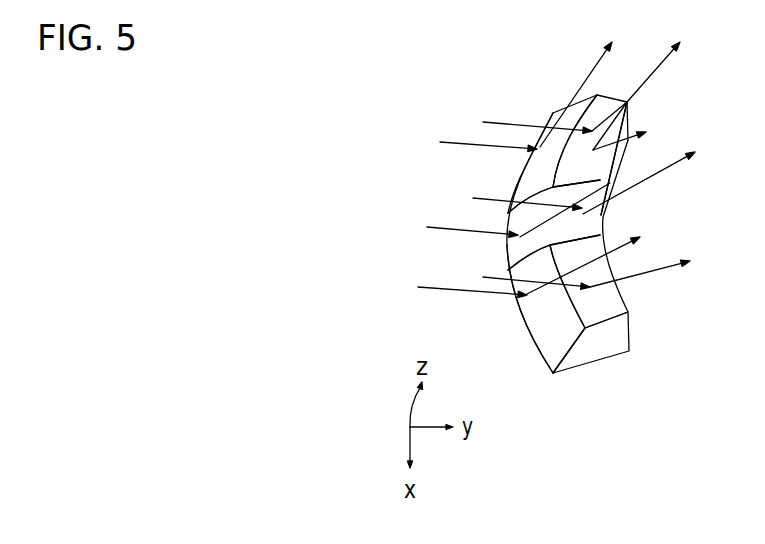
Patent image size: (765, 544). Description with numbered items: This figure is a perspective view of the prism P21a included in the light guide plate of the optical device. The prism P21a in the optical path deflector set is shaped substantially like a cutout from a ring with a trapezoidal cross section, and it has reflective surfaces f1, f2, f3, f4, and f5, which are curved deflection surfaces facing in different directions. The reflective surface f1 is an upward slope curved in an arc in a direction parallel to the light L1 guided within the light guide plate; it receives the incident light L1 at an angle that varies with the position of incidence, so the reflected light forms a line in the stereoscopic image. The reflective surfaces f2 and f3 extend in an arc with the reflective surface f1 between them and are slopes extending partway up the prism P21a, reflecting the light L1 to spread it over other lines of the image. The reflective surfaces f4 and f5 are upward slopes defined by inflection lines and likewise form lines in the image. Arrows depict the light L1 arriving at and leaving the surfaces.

The reflective surface f1 is at (585, 225).
The reflective surface f2 is at (548, 325).
The reflective surface f3 is at (532, 173).
The reflective surface f4 is at (600, 300).
The reflective surface f5 is at (618, 127).
The light L1 is at (440, 142).
The prism P21a is at (619, 378).